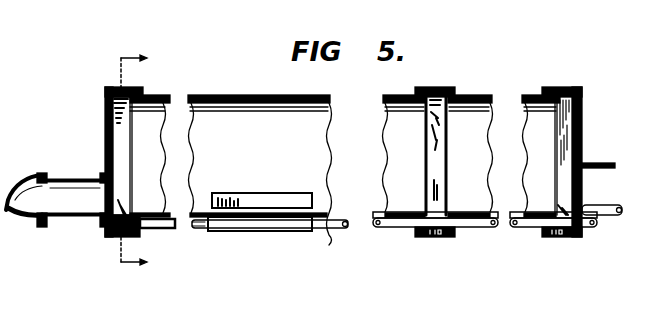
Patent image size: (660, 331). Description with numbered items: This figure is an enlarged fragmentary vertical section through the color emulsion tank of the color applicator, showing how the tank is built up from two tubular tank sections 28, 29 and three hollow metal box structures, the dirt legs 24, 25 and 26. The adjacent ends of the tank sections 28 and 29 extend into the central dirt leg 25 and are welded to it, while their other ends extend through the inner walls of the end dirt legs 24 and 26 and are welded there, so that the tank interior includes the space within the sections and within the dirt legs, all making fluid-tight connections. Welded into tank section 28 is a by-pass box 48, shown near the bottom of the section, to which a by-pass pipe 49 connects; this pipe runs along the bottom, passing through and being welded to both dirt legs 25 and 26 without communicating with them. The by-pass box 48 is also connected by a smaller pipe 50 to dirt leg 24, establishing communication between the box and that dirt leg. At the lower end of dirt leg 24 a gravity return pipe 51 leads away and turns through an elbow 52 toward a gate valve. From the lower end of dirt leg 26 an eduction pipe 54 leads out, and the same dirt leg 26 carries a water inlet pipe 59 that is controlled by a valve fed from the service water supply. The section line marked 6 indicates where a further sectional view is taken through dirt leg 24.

The section line 6- 6 is at (131, 162).
The dirt leg 24 is at (134, 90).
The dirt leg 25 is at (433, 98).
The dirt leg 26 is at (568, 93).
The tank section 28 is at (272, 108).
The tank section 29 is at (476, 98).
The by-pass box 48 is at (273, 202).
The by-pass pipe 49 is at (331, 232).
The smaller pipe 50 is at (150, 229).
The gravity return pipe 51 is at (77, 190).
The elbow 52 is at (22, 180).
The eduction pipe 54 is at (601, 207).
The water inlet pipe 59 is at (592, 165).